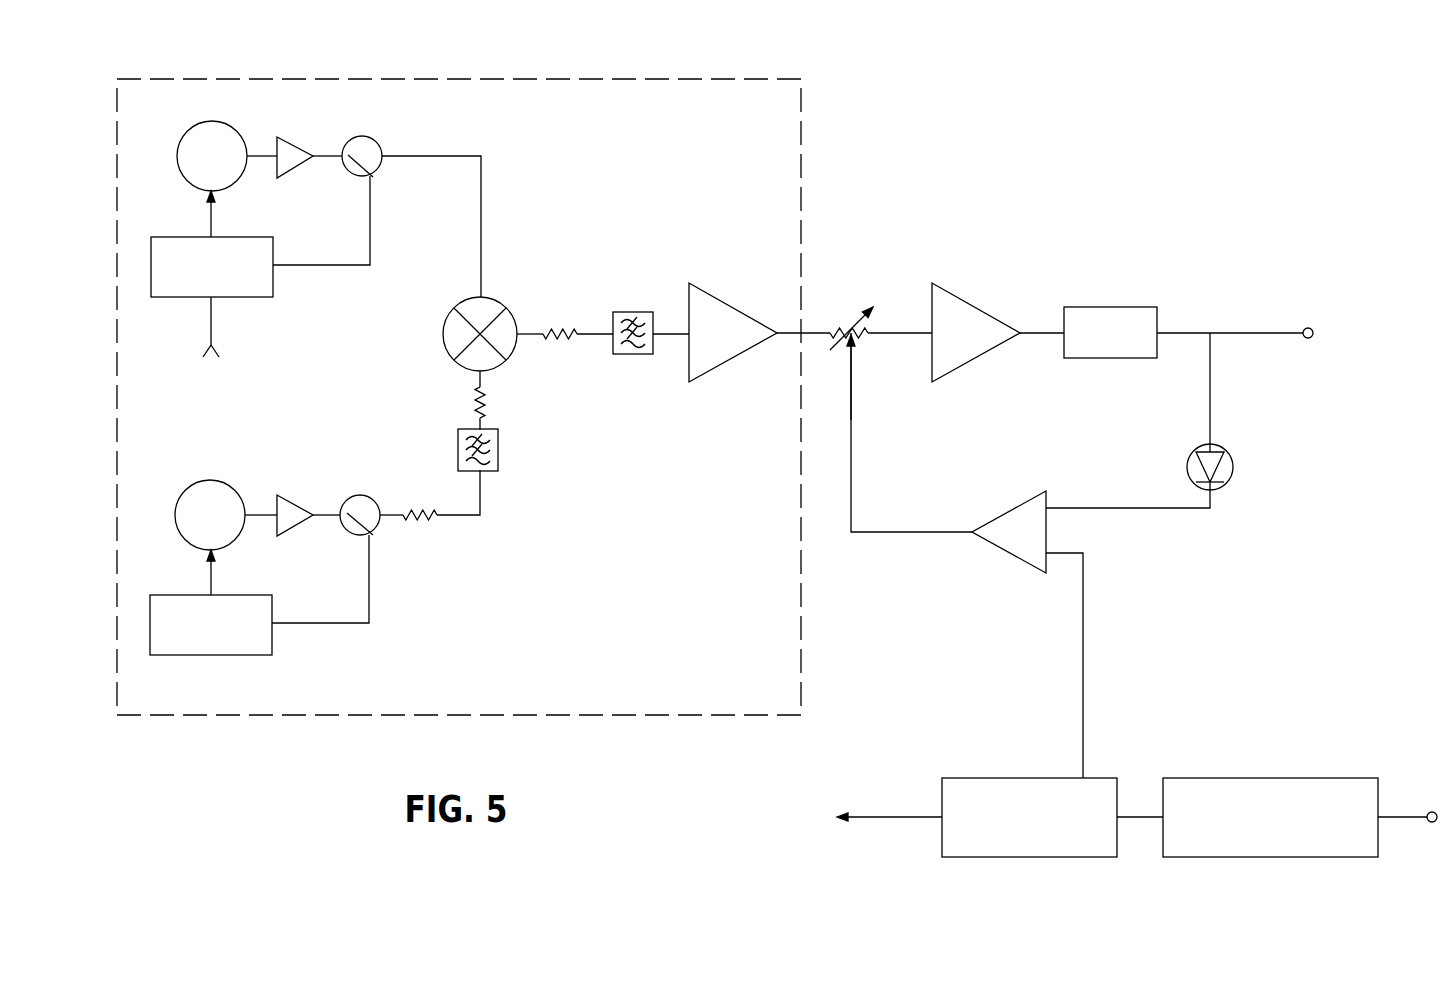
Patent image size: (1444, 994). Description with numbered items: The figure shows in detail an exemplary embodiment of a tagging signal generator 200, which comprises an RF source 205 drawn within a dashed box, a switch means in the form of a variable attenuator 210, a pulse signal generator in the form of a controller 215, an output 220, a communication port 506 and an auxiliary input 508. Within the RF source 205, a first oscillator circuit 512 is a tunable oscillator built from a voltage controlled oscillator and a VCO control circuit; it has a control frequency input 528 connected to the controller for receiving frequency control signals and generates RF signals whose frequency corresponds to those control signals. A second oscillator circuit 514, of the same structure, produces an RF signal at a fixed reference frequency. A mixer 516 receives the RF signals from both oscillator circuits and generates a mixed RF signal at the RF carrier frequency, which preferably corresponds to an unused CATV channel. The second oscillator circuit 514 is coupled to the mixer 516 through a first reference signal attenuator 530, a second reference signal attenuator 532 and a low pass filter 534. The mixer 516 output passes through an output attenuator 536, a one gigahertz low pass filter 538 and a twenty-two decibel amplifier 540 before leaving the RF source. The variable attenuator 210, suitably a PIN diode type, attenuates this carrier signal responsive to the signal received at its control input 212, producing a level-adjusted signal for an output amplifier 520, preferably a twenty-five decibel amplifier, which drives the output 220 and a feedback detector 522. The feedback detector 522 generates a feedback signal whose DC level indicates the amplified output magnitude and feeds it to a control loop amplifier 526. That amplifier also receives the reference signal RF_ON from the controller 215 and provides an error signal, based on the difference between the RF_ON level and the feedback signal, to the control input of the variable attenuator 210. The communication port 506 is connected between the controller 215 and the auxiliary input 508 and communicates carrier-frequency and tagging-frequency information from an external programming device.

The tagging signal generator 200 is at (988, 125).
The RF source 205 is at (430, 78).
The variable attenuator 210 is at (845, 312).
The control input 212 is at (858, 345).
The controller 215 is at (1017, 777).
The output 220 is at (1308, 327).
The communication port 506 is at (1272, 777).
The auxiliary input 508 is at (1432, 810).
The first oscillator circuit 512 is at (333, 292).
The second oscillator circuit 514 is at (333, 650).
The mixer 516 is at (495, 298).
The output amplifier 520 is at (973, 300).
The feedback detector 522 is at (1185, 465).
The control loop amplifier 526 is at (1004, 553).
The control frequency input 528 is at (211, 321).
The first reference signal attenuator 530 is at (425, 530).
The second reference signal attenuator 532 is at (462, 400).
The low pass filter 534 is at (458, 449).
The output attenuator 536 is at (571, 348).
The one gigahertz low pass filter 538 is at (647, 355).
The +22 dB amplifier 540 is at (733, 302).